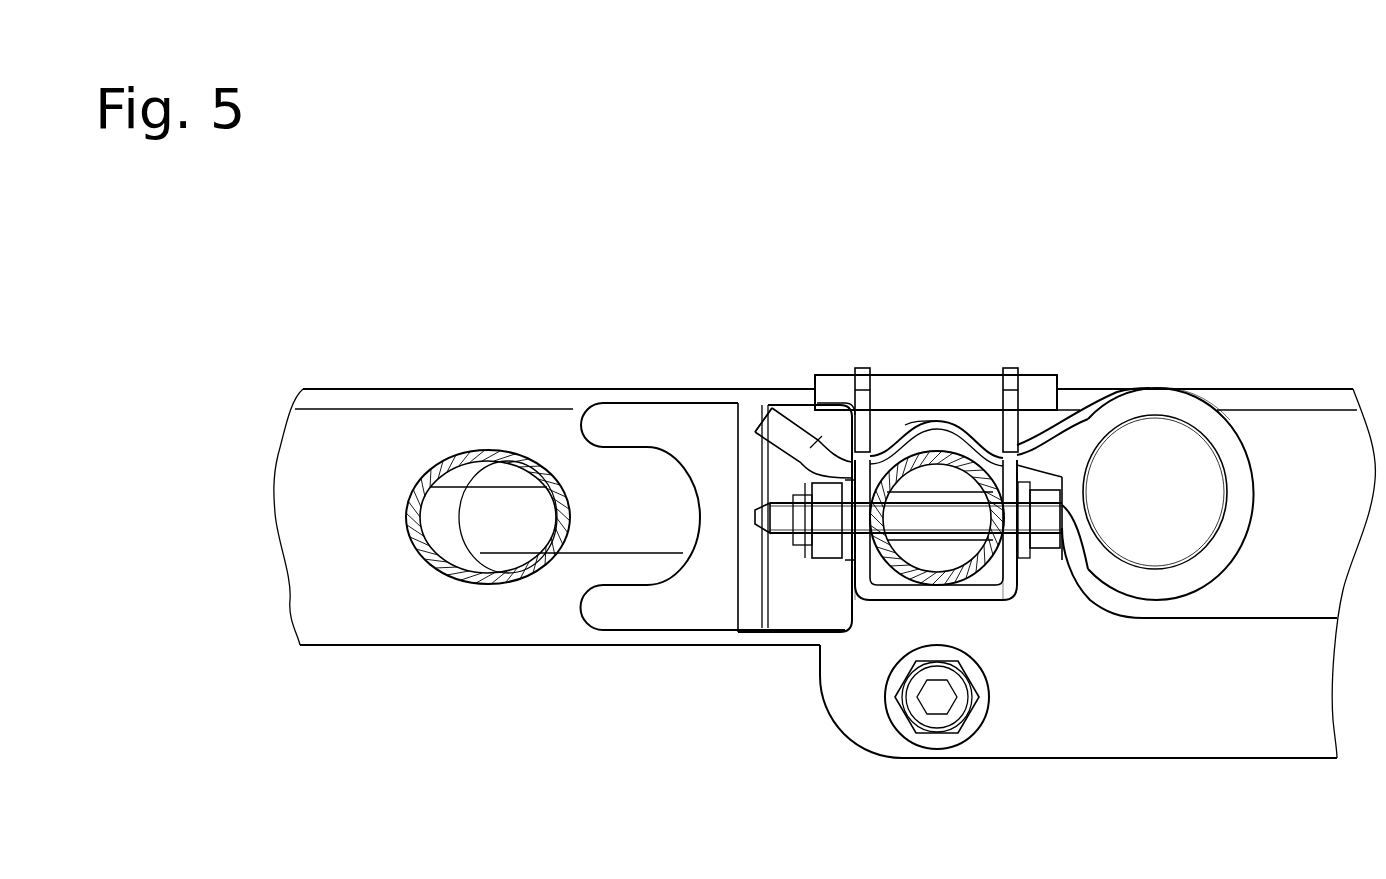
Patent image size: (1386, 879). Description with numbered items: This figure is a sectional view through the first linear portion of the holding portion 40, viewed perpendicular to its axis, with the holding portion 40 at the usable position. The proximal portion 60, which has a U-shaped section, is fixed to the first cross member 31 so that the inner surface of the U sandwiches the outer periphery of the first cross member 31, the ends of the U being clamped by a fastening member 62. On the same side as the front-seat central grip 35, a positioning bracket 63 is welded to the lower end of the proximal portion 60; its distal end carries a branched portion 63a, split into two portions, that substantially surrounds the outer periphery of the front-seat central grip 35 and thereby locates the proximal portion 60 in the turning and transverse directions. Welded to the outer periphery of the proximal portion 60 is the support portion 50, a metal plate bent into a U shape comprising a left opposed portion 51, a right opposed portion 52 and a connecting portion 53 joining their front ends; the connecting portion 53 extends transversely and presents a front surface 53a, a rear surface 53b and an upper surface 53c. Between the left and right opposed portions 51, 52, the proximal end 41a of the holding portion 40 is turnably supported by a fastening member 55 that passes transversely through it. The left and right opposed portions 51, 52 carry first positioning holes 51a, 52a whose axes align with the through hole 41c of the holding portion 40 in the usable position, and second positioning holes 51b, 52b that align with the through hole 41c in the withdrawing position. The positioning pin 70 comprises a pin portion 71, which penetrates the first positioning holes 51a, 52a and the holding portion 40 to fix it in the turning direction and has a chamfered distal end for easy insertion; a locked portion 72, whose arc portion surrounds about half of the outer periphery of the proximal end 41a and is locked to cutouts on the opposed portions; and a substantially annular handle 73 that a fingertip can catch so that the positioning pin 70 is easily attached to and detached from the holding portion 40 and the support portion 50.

The first cross member 31 is at (367, 638).
The front-seat central grip 35 is at (545, 453).
The holding portion 40 is at (937, 518).
The proximal end 41a is at (905, 452).
The through hole 41c is at (853, 575).
The support portion 50 is at (1015, 370).
The left opposed portion 51 is at (855, 403).
The first positioning hole 51a is at (850, 548).
The second positioning hole 51b is at (815, 412).
The right opposed portion 52 is at (1035, 420).
The first positioning hole 52a is at (1050, 523).
The second positioning hole 52b is at (1063, 400).
The connecting portion 53 is at (983, 575).
The front surface 53a is at (905, 600).
The rear surface 53b is at (915, 580).
The upper surface 53c is at (1017, 580).
The fastening member 55 is at (1062, 498).
The proximal portion 60 is at (1178, 758).
The fastening member 62 is at (958, 716).
The positioning bracket 63 is at (720, 633).
The branched portion 63a is at (602, 618).
The positioning pin 70 is at (1250, 540).
The pin portion 71 is at (765, 503).
The locked portion 72 is at (943, 425).
The handle 73 is at (1185, 390).